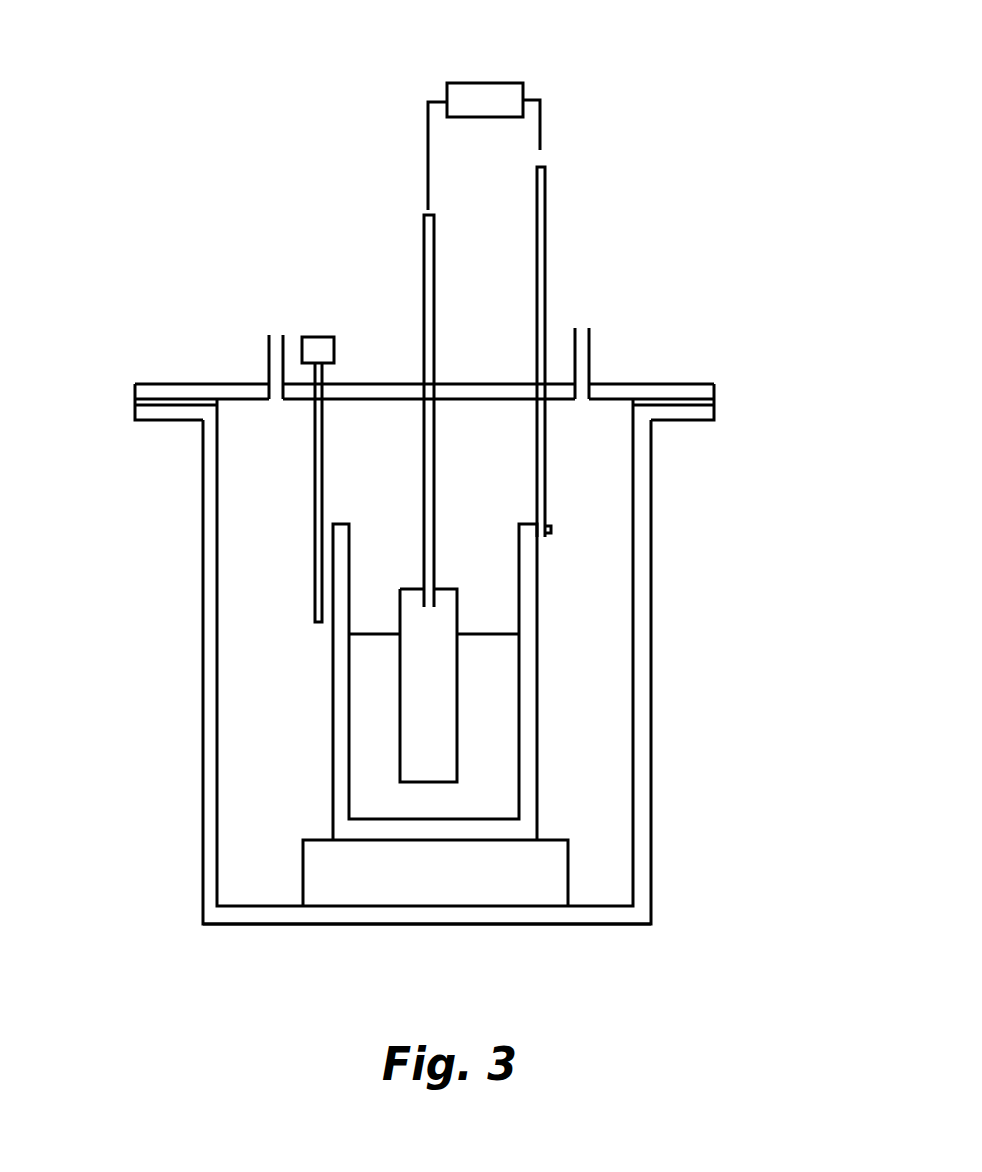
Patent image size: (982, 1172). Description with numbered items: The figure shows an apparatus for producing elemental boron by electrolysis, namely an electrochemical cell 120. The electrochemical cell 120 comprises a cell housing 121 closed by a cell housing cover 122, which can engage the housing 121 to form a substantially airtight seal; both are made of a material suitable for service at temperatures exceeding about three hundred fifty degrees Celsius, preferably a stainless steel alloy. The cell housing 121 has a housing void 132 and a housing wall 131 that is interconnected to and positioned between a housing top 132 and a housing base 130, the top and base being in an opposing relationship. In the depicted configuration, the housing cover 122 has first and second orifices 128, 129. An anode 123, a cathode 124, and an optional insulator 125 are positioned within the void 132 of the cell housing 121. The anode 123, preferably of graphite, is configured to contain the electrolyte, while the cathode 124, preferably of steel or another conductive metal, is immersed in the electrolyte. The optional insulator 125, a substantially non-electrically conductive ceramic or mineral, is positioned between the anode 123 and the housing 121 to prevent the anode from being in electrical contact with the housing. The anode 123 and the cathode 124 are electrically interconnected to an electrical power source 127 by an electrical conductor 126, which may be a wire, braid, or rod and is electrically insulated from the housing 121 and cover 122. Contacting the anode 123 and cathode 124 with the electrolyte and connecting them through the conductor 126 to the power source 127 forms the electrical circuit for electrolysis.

The electrochemical cell 120 is at (315, 186).
The cell housing 121 is at (640, 742).
The cell housing cover 122 is at (178, 383).
The anode 123 is at (527, 608).
The cathode 124 is at (426, 668).
The optional insulator 125 is at (367, 885).
The electrical conductor 126 is at (428, 155).
The electrical power source 127 is at (483, 100).
The first orifice 128 is at (273, 315).
The second orifice 129 is at (583, 308).
The housing base 130 is at (580, 912).
The housing wall 131 is at (148, 414).
The housing void 132 is at (280, 757).